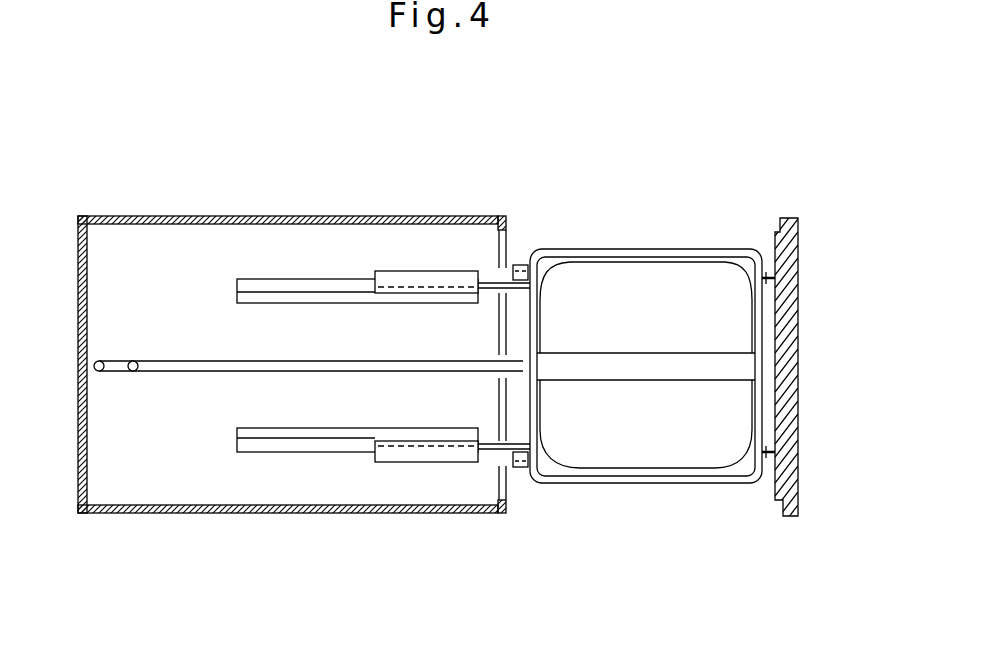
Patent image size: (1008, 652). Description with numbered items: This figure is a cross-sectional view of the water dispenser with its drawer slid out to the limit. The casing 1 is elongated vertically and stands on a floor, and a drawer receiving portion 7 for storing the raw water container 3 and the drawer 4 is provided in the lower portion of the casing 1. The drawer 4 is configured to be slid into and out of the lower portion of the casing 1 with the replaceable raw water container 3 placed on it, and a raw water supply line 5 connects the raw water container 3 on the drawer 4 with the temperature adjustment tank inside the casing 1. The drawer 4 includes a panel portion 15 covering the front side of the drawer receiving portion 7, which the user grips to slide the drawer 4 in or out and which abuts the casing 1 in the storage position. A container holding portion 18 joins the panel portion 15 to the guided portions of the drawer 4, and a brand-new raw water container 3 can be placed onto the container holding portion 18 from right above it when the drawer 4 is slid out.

The casing 1 is at (191, 516).
The raw water container 3 is at (668, 287).
The drawer 4 is at (733, 250).
The raw water supply line 5 is at (158, 365).
The drawer receiving portion 7 is at (119, 460).
The panel portion 15 is at (785, 413).
The container holding portion 18 is at (764, 337).